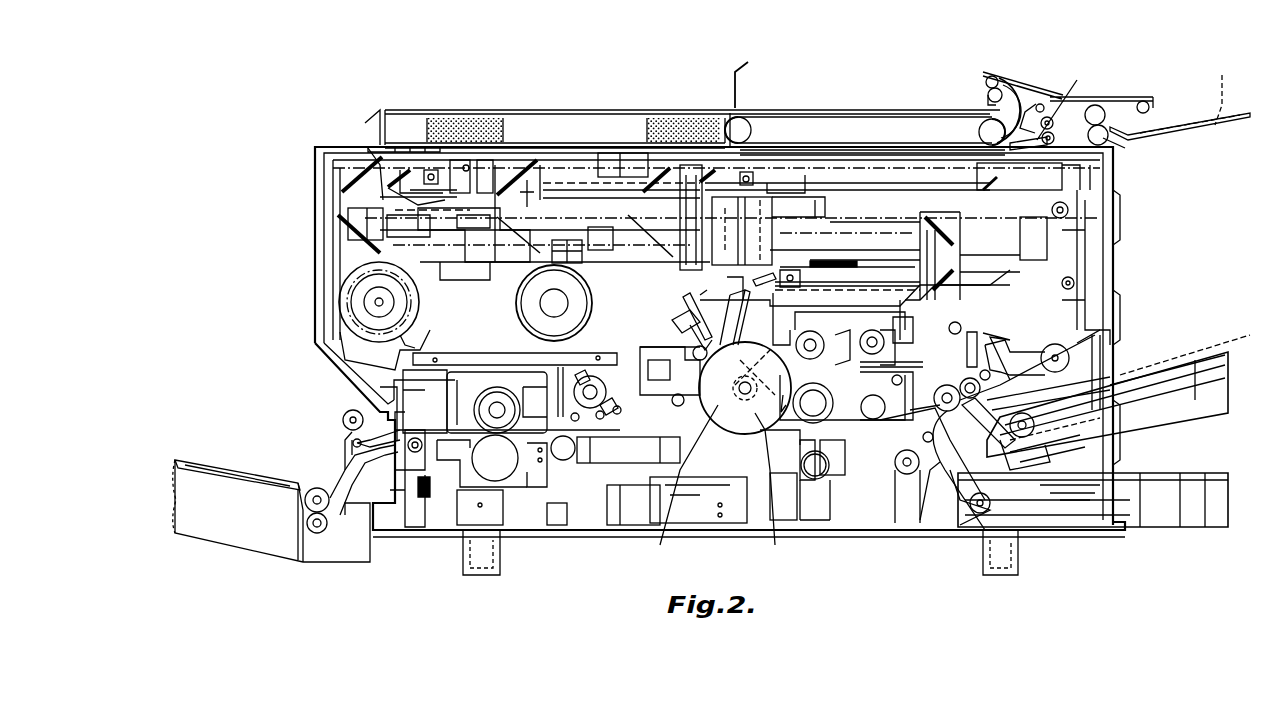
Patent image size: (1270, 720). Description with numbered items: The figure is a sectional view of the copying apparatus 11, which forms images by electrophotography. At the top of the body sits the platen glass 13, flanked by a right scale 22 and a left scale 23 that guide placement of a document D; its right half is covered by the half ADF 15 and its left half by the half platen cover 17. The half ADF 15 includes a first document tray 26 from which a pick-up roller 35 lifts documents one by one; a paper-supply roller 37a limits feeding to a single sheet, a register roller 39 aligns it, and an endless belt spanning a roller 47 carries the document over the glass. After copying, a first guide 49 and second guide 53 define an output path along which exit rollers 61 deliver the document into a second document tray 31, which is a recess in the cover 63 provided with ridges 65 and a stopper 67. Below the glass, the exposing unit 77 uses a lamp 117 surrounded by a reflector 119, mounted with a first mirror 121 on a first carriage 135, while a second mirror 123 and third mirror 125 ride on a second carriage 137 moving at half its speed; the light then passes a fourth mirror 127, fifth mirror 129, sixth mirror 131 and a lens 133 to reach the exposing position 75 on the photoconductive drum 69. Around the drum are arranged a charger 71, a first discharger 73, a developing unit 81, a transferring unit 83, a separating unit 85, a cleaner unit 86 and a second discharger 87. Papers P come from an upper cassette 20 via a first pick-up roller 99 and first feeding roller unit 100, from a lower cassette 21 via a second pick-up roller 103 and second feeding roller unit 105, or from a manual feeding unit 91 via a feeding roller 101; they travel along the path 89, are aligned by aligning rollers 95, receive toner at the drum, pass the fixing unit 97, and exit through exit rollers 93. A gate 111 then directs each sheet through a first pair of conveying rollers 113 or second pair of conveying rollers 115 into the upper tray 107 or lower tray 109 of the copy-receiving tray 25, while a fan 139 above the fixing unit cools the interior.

The copying apparatus 11 is at (1118, 280).
The platen glass 13 is at (802, 128).
The half ADF 15 is at (858, 118).
The half platen cover 17 is at (596, 118).
The upper cassette 20 is at (1212, 422).
The lower cassette 21 is at (1205, 522).
The right scale 22 is at (1052, 120).
The left scale 23 is at (396, 150).
The copy-receiving tray 25 is at (258, 550).
The first document tray 26 is at (1195, 125).
The second document tray 31 is at (840, 98).
The pick-up roller 35 is at (1150, 104).
The paper-supply roller 37a is at (1105, 112).
The register roller 39 is at (1068, 112).
The roller 47 is at (945, 118).
The first guide 49 is at (1005, 88).
The second guide 53 is at (1043, 104).
The exit rollers 61 is at (992, 75).
The cover 63 is at (1028, 86).
The ridges 65 is at (923, 115).
The stopper 67 is at (737, 72).
The photoconductive drum 69 is at (720, 422).
The charger 71 is at (690, 310).
The first discharger 73 is at (735, 315).
The exposing position 75 is at (750, 362).
The exposing unit 77 is at (650, 257).
The developing unit 81 is at (920, 342).
The transferring unit 83 is at (770, 522).
The separating unit 85 is at (718, 497).
The cleaner unit 86 is at (660, 368).
The second discharger 87 is at (685, 320).
The path 89 is at (768, 442).
The manual feeding unit 91 is at (1150, 347).
The exit rollers 93 is at (506, 461).
The aligning rollers 95 is at (822, 482).
The fixing unit 97 is at (510, 442).
The first pick-up roller 99 is at (1085, 447).
The first feeding roller unit 100 is at (950, 472).
The feeding roller 101 is at (1059, 352).
The second pick-up roller 103 is at (992, 512).
The second feeding roller unit 105 is at (909, 477).
The upper tray 107 is at (222, 472).
The lower tray 109 is at (277, 560).
The gate 111 is at (360, 427).
The first pair of conveying rollers 113 is at (343, 422).
The second pair of conveying rollers 115 is at (320, 490).
The lamp 117 is at (407, 172).
The reflector 119 is at (452, 170).
The first mirror 121 is at (430, 170).
The second mirror 123 is at (340, 158).
The third mirror 125 is at (355, 233).
The fourth mirror 127 is at (958, 242).
The fifth mirror 129 is at (780, 287).
The sixth mirror 131 is at (985, 295).
The lens 133 is at (705, 165).
The first carriage 135 is at (486, 160).
The second carriage 137 is at (545, 158).
The fan 139 is at (420, 317).
The papers P is at (1222, 337).
The document D is at (1221, 88).